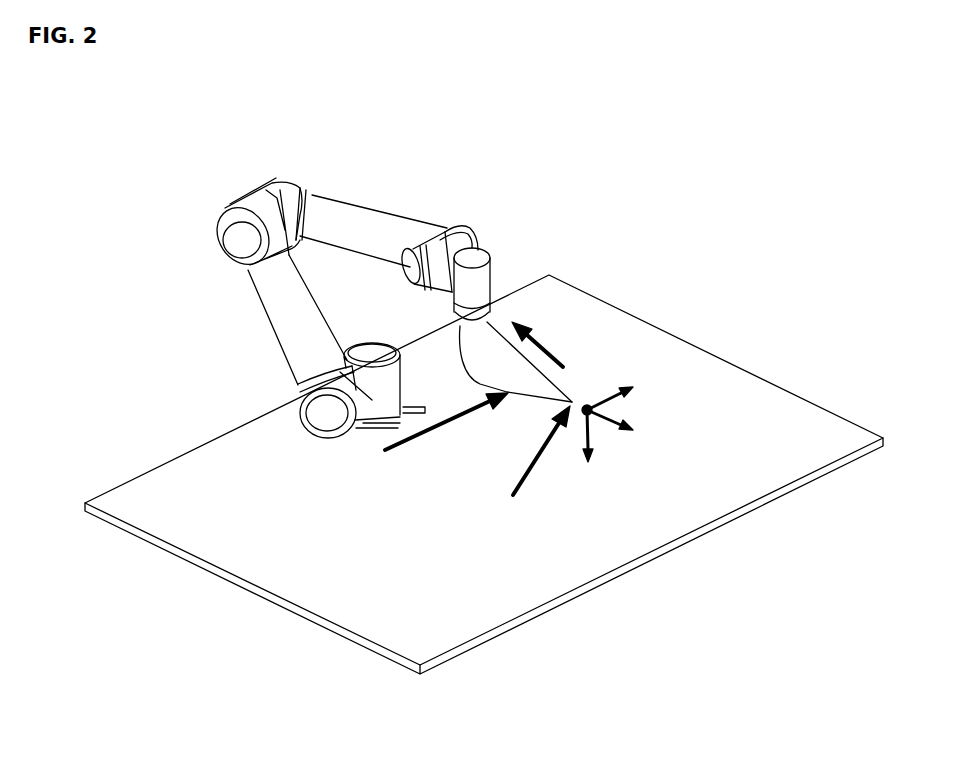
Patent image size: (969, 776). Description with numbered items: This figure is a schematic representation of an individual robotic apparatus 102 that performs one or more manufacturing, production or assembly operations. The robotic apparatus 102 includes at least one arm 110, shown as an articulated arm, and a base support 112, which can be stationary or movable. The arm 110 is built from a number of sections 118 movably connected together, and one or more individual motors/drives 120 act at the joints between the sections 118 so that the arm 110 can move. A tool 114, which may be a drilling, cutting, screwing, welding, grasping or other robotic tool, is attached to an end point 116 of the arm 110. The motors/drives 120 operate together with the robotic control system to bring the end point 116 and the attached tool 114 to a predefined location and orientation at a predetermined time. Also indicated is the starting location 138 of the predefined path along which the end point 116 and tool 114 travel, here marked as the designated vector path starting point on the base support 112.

The robotic apparatus 102 is at (437, 132).
The arm 110 is at (400, 207).
The base support 112 is at (577, 302).
The tool 114 is at (492, 290).
The end point 116 is at (470, 258).
The sections 118 is at (345, 200).
The motors/drives 120 is at (247, 247).
The starting location 138 is at (508, 505).